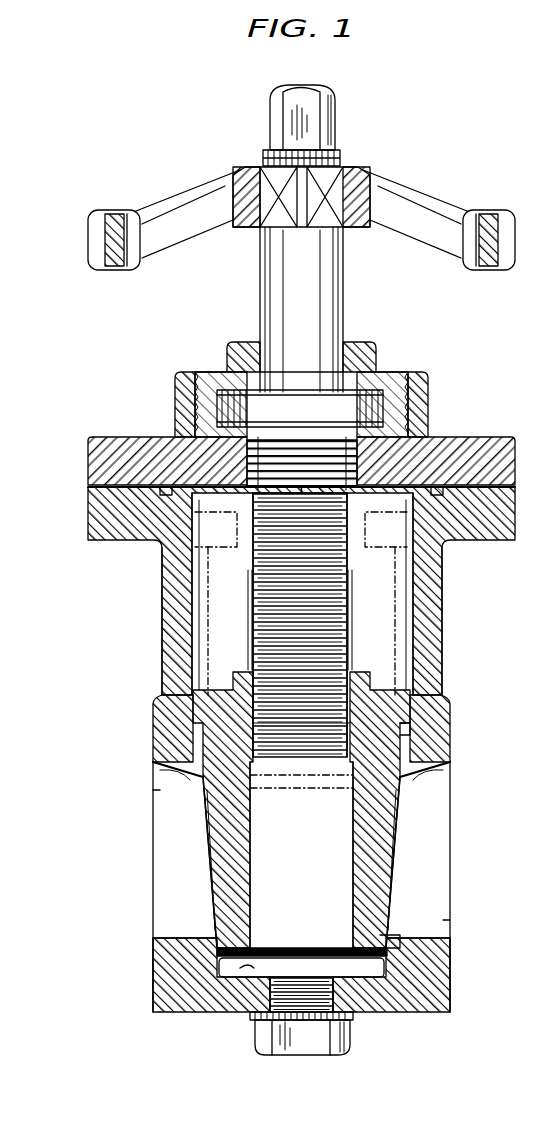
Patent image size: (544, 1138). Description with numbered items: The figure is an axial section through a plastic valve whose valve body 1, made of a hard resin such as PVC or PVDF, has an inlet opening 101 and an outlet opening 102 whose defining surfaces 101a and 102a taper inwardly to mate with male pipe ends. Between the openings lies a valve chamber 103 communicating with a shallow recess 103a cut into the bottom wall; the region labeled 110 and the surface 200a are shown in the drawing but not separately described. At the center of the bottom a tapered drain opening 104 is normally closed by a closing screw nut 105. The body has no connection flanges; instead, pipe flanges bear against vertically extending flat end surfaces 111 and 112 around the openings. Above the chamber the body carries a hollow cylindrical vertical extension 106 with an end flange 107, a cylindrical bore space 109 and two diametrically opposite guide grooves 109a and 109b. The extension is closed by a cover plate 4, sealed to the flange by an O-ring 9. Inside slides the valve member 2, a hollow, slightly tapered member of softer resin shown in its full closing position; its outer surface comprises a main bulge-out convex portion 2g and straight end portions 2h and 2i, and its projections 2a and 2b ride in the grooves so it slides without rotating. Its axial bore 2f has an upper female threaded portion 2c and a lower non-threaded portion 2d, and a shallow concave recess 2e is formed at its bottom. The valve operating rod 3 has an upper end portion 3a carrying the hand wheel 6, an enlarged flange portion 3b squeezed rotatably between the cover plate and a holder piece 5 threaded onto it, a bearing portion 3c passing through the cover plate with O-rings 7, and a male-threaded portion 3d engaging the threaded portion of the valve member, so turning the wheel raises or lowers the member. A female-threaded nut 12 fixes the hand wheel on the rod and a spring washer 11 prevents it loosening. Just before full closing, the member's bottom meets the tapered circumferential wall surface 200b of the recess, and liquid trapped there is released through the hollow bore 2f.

The valve body 1 is at (148, 738).
The valve member 2 is at (315, 816).
The projection 2a is at (190, 712).
The projection 2b is at (410, 710).
The upper female threaded portion 2c is at (283, 722).
The lower non-threaded portion 2d is at (265, 870).
The shallow concave recess 2e is at (338, 956).
The axial bore 2f is at (310, 848).
The main bulge-out convex portion 2g is at (430, 840).
The straight end portion 2h is at (395, 735).
The straight end portion 2i is at (390, 945).
The valve operating rod 3 is at (296, 492).
The upper end portion 3a is at (272, 300).
The enlarged flange portion 3b is at (220, 405).
The bearing portion 3c is at (340, 438).
The male-threaded portion 3d is at (285, 637).
The cover plate 4 is at (97, 462).
The holder piece 5 is at (228, 352).
The hand wheel 6 is at (95, 240).
The O-ring 7 is at (247, 450).
The O-ring 9 is at (97, 500).
The spring washer 11 is at (262, 160).
The female-threaded nut 12 is at (272, 118).
The inlet opening 101 is at (168, 848).
The defining surface 101a is at (172, 773).
The outlet opening 102 is at (438, 858).
The defining surface 102a is at (420, 778).
The valve chamber 103 is at (207, 912).
The shallow recess 103a is at (247, 970).
The tapered drain opening 104 is at (320, 970).
The closing screw nut 105 is at (345, 1043).
The vertical extension 106 is at (166, 590).
The end flange 107 is at (97, 528).
The cylindrical bore space 109 is at (385, 578).
The guide groove 109a is at (195, 615).
The guide groove 109b is at (405, 618).
The base plate 110 is at (172, 997).
The flat end surface 111 is at (155, 970).
The flat end surface 112 is at (447, 970).
The housing surface 200a is at (203, 812).
The tapered circumferential wall surface 200b is at (375, 920).